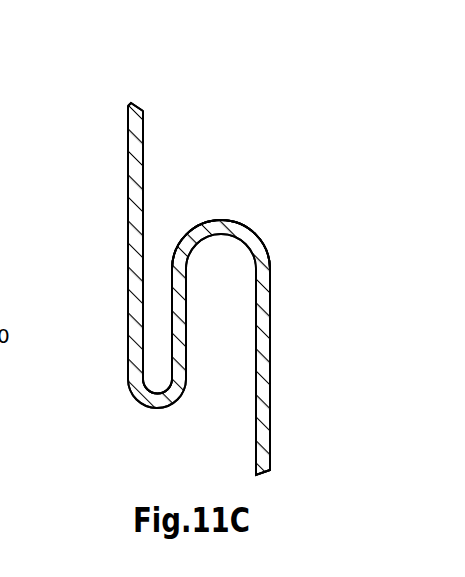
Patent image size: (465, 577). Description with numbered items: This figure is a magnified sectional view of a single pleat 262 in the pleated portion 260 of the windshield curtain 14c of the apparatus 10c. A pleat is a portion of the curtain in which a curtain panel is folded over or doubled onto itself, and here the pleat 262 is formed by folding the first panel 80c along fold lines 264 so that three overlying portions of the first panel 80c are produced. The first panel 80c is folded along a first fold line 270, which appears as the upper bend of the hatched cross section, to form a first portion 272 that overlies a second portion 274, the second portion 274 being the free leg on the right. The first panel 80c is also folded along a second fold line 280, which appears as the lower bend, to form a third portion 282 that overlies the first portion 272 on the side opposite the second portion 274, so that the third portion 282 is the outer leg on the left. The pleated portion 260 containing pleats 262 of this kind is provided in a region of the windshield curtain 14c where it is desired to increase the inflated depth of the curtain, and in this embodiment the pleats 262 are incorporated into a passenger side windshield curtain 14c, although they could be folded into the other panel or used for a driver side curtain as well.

The pleated portion 260 is at (97, 122).
The pleat 262 is at (74, 183).
The windshield curtain 14c is at (190, 108).
The apparatus 10c is at (236, 100).
The first fold line 270 is at (219, 222).
The fold lines 264 is at (233, 222).
The third portion 282 is at (138, 288).
The second portion 274 is at (259, 340).
The first portion 272 is at (184, 323).
The second fold line 280 is at (157, 409).
The first panel 80c is at (261, 440).